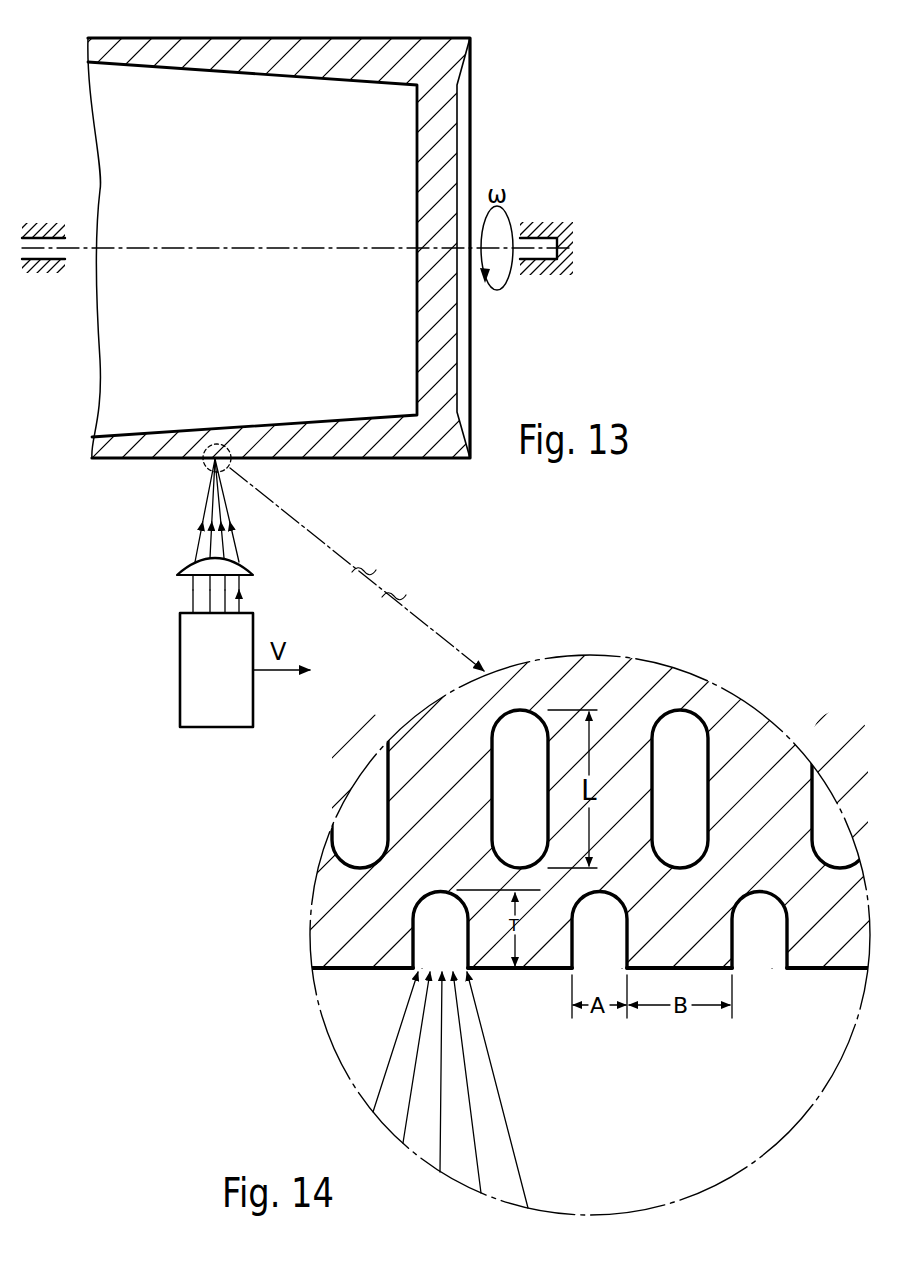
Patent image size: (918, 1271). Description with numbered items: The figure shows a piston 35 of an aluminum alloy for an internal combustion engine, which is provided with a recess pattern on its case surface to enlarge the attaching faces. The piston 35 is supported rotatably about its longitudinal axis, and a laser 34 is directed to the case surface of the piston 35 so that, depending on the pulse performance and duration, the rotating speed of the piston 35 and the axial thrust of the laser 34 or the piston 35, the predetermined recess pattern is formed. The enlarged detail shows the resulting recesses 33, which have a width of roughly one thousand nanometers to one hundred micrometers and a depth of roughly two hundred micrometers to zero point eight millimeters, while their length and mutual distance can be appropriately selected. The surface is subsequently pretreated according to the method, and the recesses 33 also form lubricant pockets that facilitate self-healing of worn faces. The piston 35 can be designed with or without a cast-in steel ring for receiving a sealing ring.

In FIG. 13, the piston 35 is at (470, 72).
In FIG. 14, the piston 35 is at (755, 725).
In FIG. 13, the laser 34 is at (187, 706).
In FIG. 14, the recesses 33 is at (738, 913).